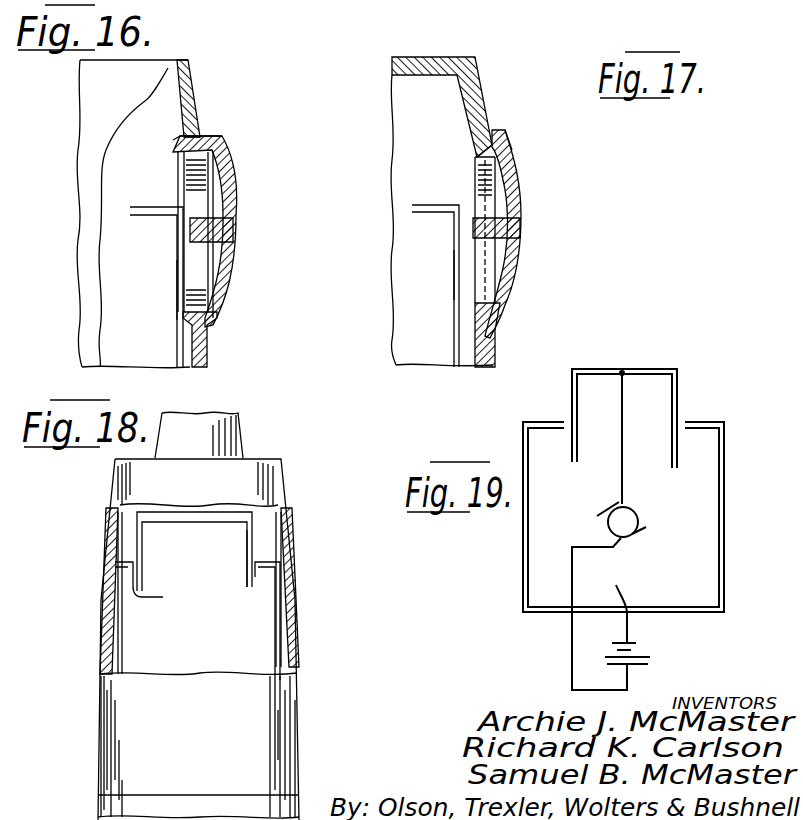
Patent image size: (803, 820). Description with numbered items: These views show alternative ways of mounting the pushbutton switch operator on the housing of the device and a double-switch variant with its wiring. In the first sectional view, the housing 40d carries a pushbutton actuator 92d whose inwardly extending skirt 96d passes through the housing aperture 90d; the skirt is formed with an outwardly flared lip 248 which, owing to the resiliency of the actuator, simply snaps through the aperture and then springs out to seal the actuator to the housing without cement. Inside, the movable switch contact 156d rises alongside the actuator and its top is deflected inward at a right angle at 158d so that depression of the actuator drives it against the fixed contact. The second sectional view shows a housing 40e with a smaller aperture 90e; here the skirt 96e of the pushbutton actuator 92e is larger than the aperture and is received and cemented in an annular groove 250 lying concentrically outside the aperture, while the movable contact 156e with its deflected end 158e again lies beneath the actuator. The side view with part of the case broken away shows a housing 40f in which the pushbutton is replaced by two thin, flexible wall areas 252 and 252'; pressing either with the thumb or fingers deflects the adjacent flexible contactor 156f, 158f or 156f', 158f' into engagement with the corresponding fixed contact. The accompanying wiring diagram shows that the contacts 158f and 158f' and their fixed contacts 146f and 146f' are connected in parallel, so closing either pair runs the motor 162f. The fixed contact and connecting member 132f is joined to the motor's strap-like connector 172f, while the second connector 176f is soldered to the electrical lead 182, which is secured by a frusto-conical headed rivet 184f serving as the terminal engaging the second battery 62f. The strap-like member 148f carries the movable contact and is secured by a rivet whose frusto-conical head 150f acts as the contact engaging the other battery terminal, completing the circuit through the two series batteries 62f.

In FIG. 16, the upper housing portion 40d is at (178, 84).
In FIG. 16, the housing aperture 90d is at (196, 118).
In FIG. 16, the skirt 96d is at (222, 150).
In FIG. 16, the pushbutton actuator 92d is at (236, 183).
In FIG. 16, the flared lip 248 is at (178, 138).
In FIG. 16, the deflected contact portion 158d is at (153, 207).
In FIG. 16, the movable switch contact 156d is at (182, 281).
In FIG. 17, the upper housing portion 40e is at (497, 353).
In FIG. 17, the housing aperture 90e is at (508, 176).
In FIG. 17, the skirt 96e is at (493, 130).
In FIG. 17, the pushbutton actuator 92e is at (524, 196).
In FIG. 17, the annular groove 250 is at (498, 344).
In FIG. 17, the deflected contact portion 158e is at (430, 208).
In FIG. 17, the movable switch contact 156e is at (452, 258).
In FIG. 18, the upper housing portion 40f is at (268, 689).
In FIG. 18, the thin walled portion 252 is at (318, 587).
In FIG. 18, the thin walled portion 252' is at (69, 591).
In FIG. 19, the movable switch contact 156f is at (654, 517).
In FIG. 18, the movable switch contact 156f' is at (199, 593).
In FIG. 19, the movable switch contact 156f' is at (559, 495).
In FIG. 18, the fixed contact 146f is at (218, 558).
In FIG. 19, the fixed contact 146f is at (655, 406).
In FIG. 18, the fixed contact 146f' is at (131, 551).
In FIG. 19, the fixed contact 146f' is at (574, 462).
In FIG. 18, the deflected contact portion 158f is at (305, 602).
In FIG. 19, the deflected contact portion 158f is at (600, 403).
In FIG. 18, the deflected contact portion 158f' is at (166, 586).
In FIG. 19, the fixed contact and connecting member 132f is at (614, 370).
In FIG. 19, the motor electrical connector 172f is at (624, 468).
In FIG. 19, the D.C. motor 162f is at (600, 528).
In FIG. 19, the second motor electrical connector 176f is at (570, 580).
In FIG. 19, the battery contact 150f is at (613, 602).
In FIG. 19, the strap-like member 148f is at (650, 610).
In FIG. 19, the electrical lead 182 is at (570, 642).
In FIG. 19, the batteries 62f is at (634, 657).
In FIG. 19, the second terminal rivet 184f is at (628, 688).